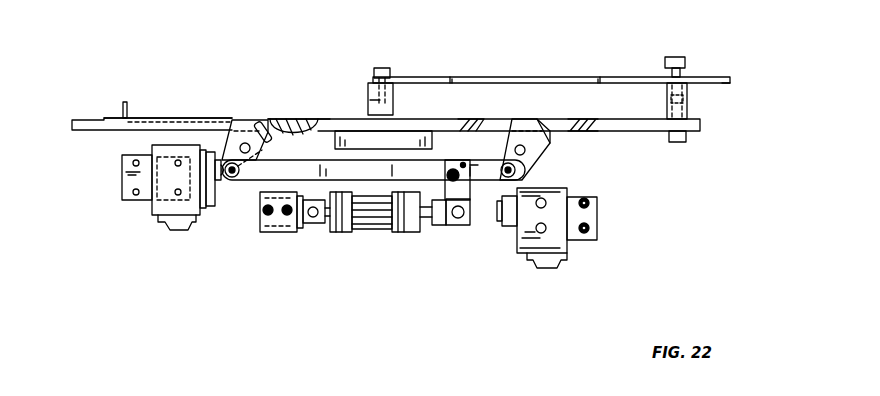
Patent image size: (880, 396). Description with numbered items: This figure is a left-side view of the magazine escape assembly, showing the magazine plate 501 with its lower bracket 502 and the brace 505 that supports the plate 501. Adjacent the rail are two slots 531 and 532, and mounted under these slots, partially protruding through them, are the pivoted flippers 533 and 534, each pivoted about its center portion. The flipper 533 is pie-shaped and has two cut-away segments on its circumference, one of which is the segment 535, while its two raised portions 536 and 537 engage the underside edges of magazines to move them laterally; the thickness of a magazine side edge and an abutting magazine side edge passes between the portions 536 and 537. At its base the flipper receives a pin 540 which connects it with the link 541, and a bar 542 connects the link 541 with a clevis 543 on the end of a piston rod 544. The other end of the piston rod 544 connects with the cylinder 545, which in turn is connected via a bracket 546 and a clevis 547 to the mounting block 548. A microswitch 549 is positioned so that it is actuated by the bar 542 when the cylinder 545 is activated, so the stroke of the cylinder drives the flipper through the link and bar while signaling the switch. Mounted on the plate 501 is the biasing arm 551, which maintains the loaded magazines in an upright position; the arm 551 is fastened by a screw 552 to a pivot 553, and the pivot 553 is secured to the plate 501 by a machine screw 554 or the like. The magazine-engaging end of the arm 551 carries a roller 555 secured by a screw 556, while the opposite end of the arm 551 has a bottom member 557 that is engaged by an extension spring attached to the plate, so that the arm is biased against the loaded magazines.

The magazine plate 501 is at (93, 129).
The lower bracket 502 is at (177, 110).
The brace 505 is at (156, 263).
The slot 531 is at (272, 119).
The slot 532 is at (570, 118).
The flipper 533 is at (213, 118).
The flipper 534 is at (533, 119).
The cut-away segment 535 is at (269, 140).
The raised portion 536 is at (250, 119).
The raised portion 537 is at (312, 120).
The pin 540 is at (238, 182).
The link 541 is at (373, 165).
The bar 542 is at (472, 228).
The clevis 543 is at (455, 226).
The piston rod 544 is at (440, 226).
The cylinder 545 is at (382, 233).
The bracket 546 is at (320, 226).
The clevis 547 is at (302, 229).
The mounting block 548 is at (261, 229).
The microswitch 549 is at (561, 203).
The biasing arm 551 is at (519, 77).
The screw 552 is at (677, 57).
The pivot 553 is at (688, 104).
The machine screw 554 is at (686, 140).
The roller 555 is at (370, 100).
The screw 556 is at (381, 68).
The bottom member 557 is at (722, 84).